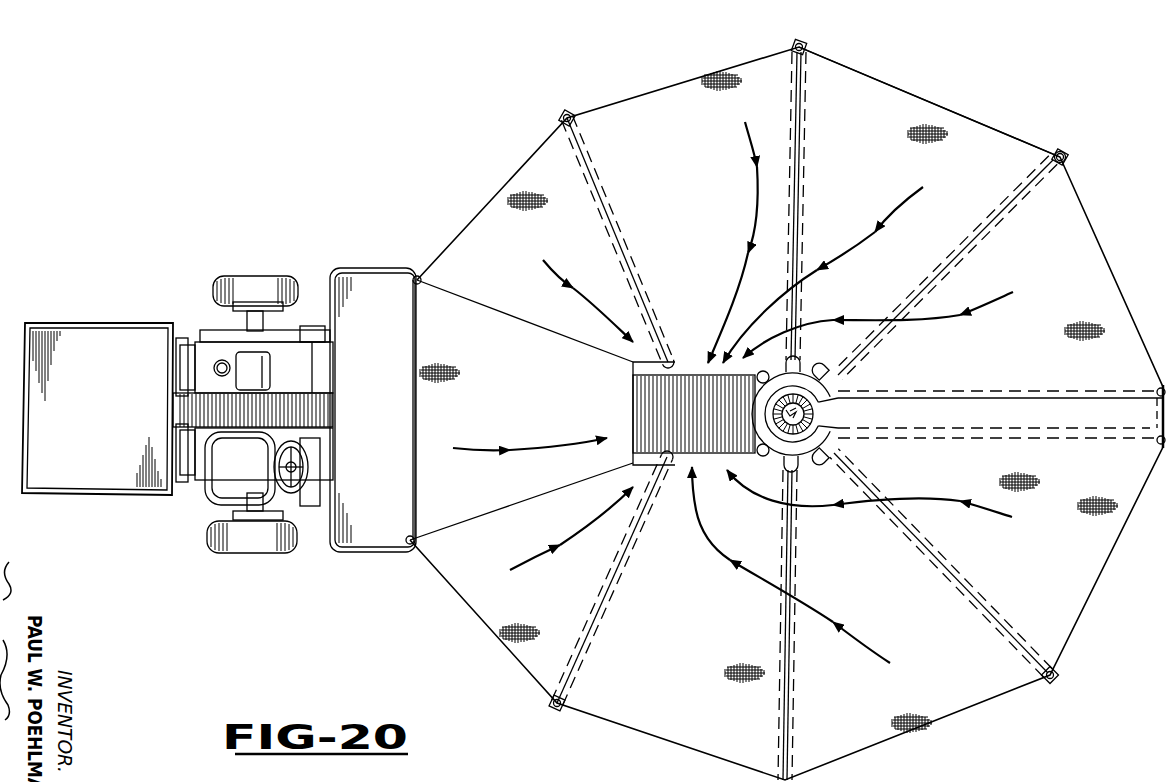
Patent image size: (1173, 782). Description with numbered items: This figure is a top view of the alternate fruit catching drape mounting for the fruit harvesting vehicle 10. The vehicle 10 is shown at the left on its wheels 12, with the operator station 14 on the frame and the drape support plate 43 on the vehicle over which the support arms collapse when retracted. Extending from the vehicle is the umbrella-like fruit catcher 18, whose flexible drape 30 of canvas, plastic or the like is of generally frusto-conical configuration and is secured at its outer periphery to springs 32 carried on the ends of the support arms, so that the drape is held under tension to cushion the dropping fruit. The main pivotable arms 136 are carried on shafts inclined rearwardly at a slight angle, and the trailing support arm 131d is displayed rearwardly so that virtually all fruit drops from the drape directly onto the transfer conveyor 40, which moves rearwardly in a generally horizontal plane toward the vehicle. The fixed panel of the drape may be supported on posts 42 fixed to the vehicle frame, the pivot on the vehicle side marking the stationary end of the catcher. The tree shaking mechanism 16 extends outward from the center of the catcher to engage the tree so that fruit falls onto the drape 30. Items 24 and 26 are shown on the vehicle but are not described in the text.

The fruit harvesting vehicle 10 is at (310, 592).
The wheels 12 is at (240, 276).
The operator station 14 is at (203, 509).
The tree shaking mechanism 16 is at (858, 413).
The umbrella-like fruit catcher 18 is at (478, 660).
The hopper 24 is at (58, 322).
The frame member 26 is at (190, 336).
The flexible drape 30 is at (888, 98).
The springs 32 is at (1060, 151).
The transfer conveyor 40 is at (643, 407).
The posts 42 is at (410, 545).
The drape support plate 43 is at (358, 268).
The trailing support arm 131d is at (575, 152).
The main pivotable arms 136 is at (843, 380).